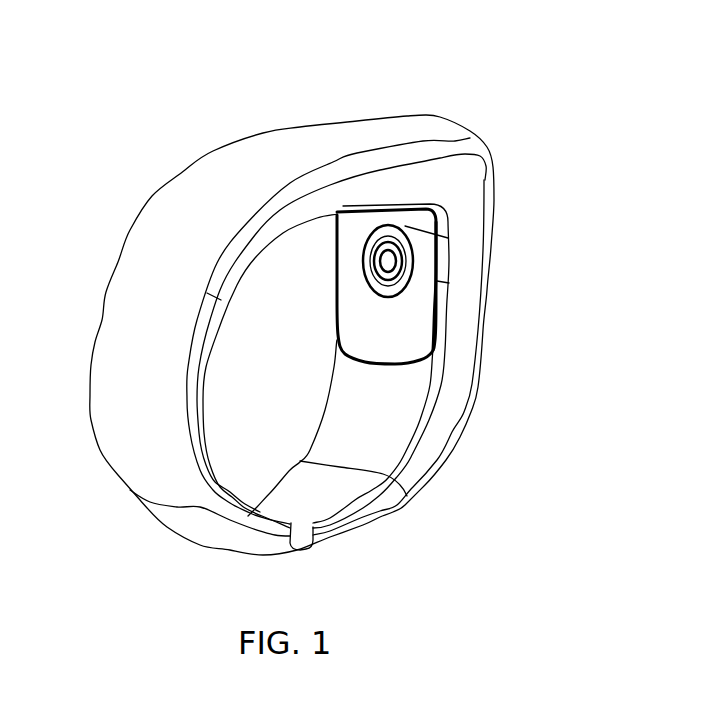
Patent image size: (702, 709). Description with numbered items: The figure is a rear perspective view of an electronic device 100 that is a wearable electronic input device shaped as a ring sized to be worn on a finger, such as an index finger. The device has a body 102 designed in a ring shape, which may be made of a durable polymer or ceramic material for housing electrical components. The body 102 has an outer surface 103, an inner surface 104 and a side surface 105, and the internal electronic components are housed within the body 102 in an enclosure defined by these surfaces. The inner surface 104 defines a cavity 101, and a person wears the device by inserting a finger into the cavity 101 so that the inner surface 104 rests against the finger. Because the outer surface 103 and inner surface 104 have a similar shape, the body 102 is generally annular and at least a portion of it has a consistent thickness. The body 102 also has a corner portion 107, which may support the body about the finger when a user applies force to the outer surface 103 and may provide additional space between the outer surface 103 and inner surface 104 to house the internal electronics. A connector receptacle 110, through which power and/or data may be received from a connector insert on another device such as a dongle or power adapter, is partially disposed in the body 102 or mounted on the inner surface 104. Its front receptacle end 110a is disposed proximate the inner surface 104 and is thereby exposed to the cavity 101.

The electronic device 100 is at (363, 101).
The cavity 101 is at (243, 485).
The body 102 is at (158, 233).
The outer surface 103 is at (140, 475).
The inner surface 104 is at (363, 503).
The side surface 105 is at (467, 203).
The corner portion 107 is at (467, 178).
The connector receptacle 110 is at (400, 257).
The front receptacle end 110a is at (402, 275).